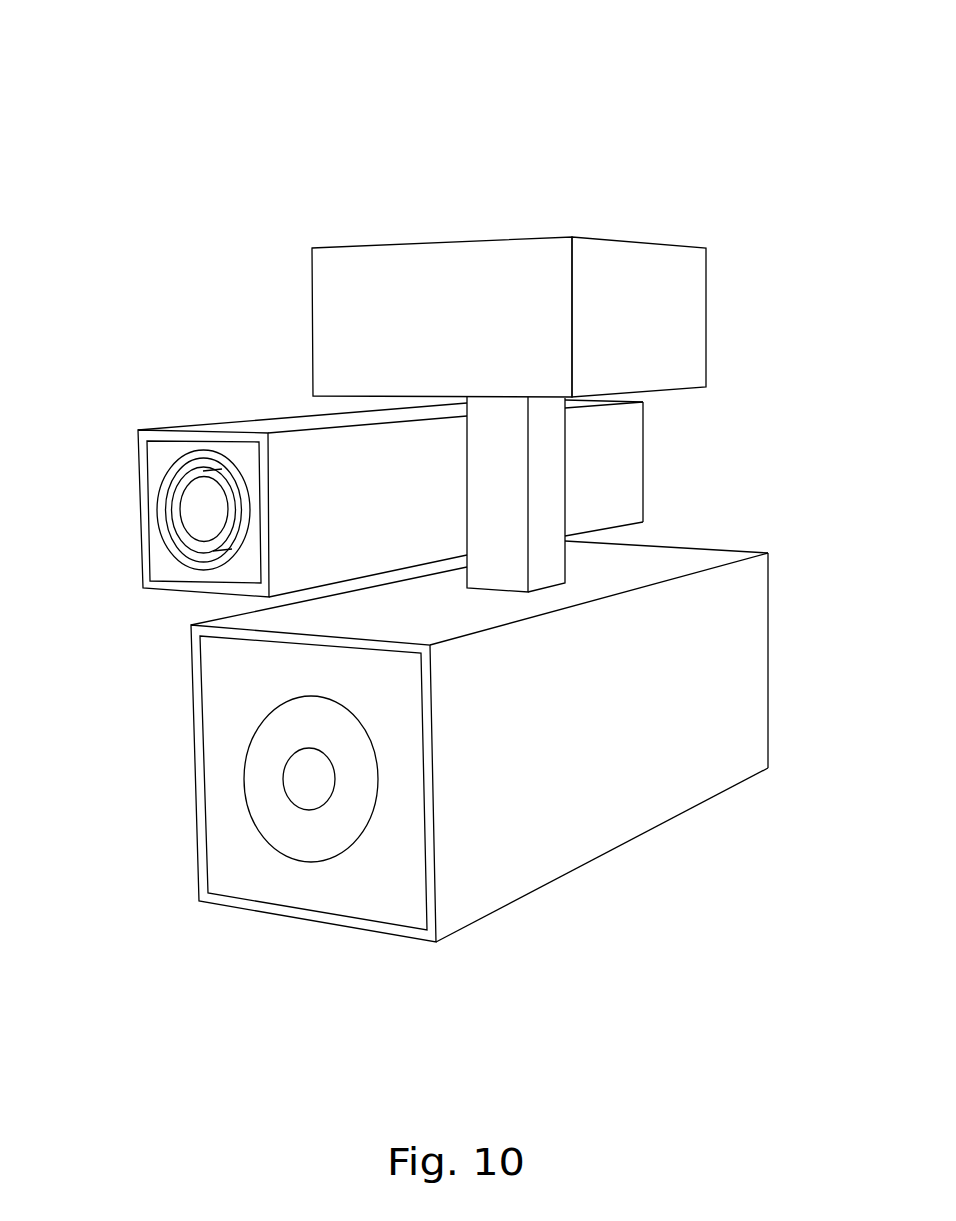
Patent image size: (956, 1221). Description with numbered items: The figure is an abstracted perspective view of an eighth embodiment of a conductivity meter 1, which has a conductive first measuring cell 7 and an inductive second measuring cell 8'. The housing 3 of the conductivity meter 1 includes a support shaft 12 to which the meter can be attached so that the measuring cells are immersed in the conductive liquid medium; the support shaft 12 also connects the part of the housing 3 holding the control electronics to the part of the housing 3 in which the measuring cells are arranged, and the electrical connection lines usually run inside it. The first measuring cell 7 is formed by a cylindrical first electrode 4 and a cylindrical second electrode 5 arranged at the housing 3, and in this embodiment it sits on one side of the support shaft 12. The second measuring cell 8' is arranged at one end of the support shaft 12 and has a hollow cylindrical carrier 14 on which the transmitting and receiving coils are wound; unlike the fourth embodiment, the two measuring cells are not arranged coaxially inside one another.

The conductivity meter 1 is at (730, 200).
The housing 3 is at (708, 748).
The first electrode 4 is at (177, 463).
The second electrode 5 is at (186, 537).
The first measuring cell 7 is at (180, 551).
The second measuring cell 8' is at (212, 777).
The support shaft 12 is at (550, 538).
The hollow cylindrical carrier 14 is at (310, 828).